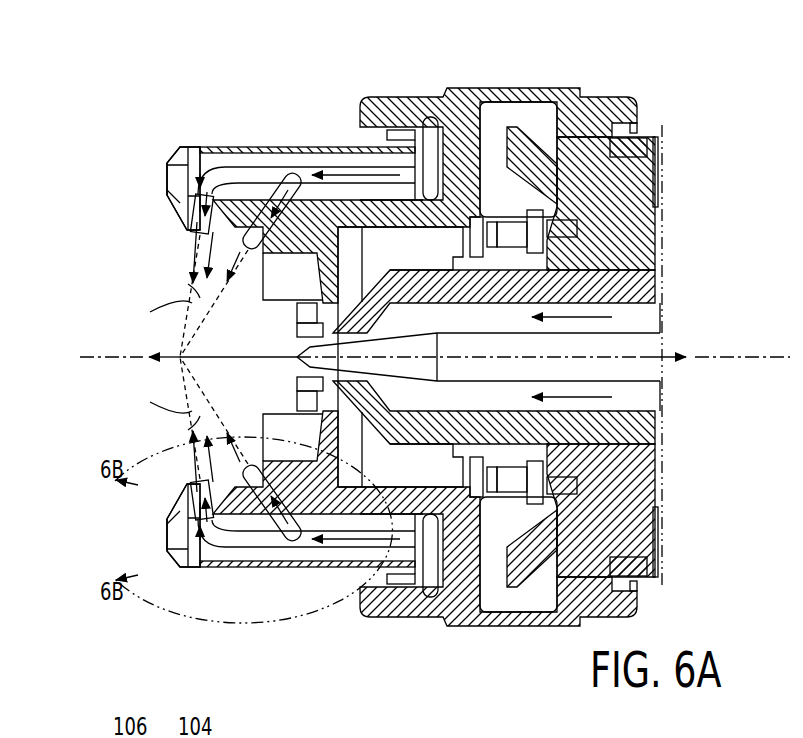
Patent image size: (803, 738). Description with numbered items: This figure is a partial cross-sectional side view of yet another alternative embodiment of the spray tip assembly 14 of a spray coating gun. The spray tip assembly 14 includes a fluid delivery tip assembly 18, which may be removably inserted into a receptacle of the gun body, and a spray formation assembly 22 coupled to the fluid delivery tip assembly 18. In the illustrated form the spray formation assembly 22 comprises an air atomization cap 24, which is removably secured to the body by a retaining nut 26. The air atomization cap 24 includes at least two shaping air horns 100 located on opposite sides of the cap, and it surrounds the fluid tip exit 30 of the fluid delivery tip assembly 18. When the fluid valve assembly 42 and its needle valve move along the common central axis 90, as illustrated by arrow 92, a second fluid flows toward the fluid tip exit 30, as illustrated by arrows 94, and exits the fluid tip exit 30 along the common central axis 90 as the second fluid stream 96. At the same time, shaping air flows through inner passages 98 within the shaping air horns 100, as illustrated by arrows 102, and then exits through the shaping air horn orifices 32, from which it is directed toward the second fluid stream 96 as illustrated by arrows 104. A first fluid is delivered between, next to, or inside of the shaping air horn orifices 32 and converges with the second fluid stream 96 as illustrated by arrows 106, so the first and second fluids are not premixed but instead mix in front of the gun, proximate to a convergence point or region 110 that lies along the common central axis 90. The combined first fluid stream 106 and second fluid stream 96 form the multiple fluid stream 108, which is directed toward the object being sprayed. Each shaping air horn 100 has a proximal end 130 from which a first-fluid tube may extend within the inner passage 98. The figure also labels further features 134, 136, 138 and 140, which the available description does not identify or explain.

The spray tip assembly 14 is at (669, 62).
The fluid delivery tip assembly 18 is at (660, 284).
The spray formation assembly 22 is at (68, 122).
The air atomization cap 24 is at (188, 160).
The retaining nut 26 is at (512, 628).
The fluid tip exit 30 is at (300, 348).
The shaping air horn orifice 32 is at (190, 233).
The fluid valve assembly 42 is at (652, 370).
The common central axis 90 is at (723, 355).
The arrow 92 is at (667, 353).
The arrows 94 is at (577, 313).
The second fluid stream 96 is at (225, 360).
The inner passage 98 is at (180, 163).
The shaping air horn 100 is at (170, 183).
The arrows 102 is at (230, 158).
The arrows 104 is at (197, 290).
The first fluid stream 106 is at (186, 300).
The multiple fluid stream 108 is at (180, 360).
The convergence point or region 110 is at (180, 354).
The proximal end 130 is at (421, 84).
The sleeve 134 is at (310, 163).
The angled nozzle 136 is at (273, 190).
The nozzle outlet 138 is at (195, 206).
The retaining pin 140 is at (330, 160).